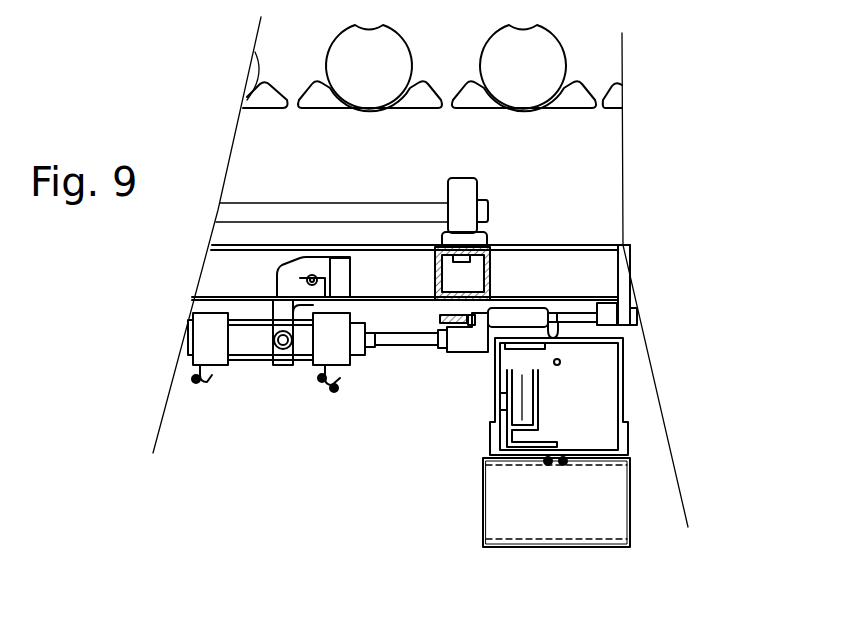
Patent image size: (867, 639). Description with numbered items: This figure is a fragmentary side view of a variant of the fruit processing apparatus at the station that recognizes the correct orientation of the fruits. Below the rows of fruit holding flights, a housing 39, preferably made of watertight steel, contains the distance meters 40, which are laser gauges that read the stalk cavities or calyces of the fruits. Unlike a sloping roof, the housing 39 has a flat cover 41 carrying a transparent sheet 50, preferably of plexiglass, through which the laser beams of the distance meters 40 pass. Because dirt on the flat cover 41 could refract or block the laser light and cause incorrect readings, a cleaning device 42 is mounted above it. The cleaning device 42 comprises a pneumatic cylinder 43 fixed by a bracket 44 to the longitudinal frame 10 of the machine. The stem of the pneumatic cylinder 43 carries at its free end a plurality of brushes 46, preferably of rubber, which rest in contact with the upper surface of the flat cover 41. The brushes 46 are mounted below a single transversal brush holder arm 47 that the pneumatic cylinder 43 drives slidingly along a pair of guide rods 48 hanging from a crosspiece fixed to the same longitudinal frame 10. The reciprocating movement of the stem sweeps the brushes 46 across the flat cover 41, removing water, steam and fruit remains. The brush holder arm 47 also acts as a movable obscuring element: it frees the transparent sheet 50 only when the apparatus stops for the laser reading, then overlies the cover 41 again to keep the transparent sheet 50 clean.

The longitudinal frame 10 is at (217, 265).
The housing 39 is at (622, 398).
The distance meters 40 is at (493, 438).
The flat cover 41 is at (592, 336).
The cleaning device 42 is at (343, 405).
The pneumatic cylinder 43 is at (258, 362).
The bracket 44 is at (272, 285).
The brushes 46 is at (552, 337).
The transversal brush holder arm 47 is at (475, 355).
The guide rods 48 is at (573, 312).
The transparent sheet 50 is at (508, 347).